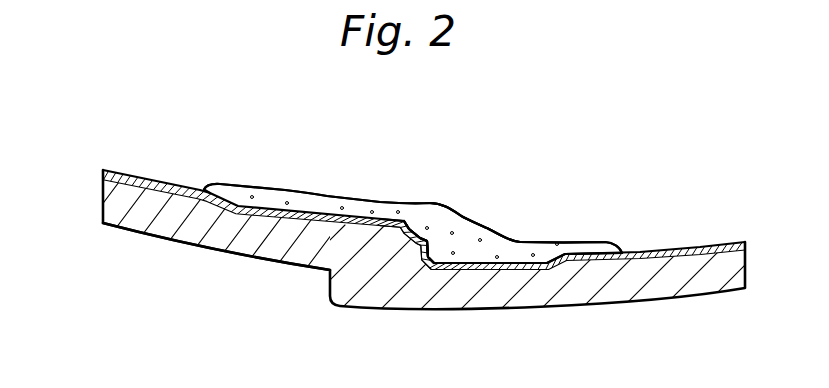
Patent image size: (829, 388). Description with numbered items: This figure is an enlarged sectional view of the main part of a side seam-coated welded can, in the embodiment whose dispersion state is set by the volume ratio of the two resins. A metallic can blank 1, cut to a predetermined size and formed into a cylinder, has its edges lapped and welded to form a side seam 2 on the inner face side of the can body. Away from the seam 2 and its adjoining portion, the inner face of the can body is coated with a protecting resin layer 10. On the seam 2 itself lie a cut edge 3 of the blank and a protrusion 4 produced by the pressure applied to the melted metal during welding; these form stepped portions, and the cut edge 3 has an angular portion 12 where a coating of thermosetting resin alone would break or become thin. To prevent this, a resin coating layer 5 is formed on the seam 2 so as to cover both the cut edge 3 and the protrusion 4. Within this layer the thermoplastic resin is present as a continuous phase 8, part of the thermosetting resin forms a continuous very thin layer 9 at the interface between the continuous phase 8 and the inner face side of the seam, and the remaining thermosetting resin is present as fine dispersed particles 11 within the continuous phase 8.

The metallic can blank 1 is at (118, 214).
The side seam 2 is at (272, 258).
The cut edge 3 is at (402, 236).
The protrusion 4 is at (440, 228).
The resin coating layer 5 is at (327, 198).
The continuous phase of thermoplastic resin 8 is at (272, 195).
The continuous thin layer of thermosetting resin 9 is at (382, 218).
The protecting resin layer 10 is at (128, 178).
The dispersed particles of thermosetting resin 11 is at (435, 216).
The angular portion 12 is at (410, 220).